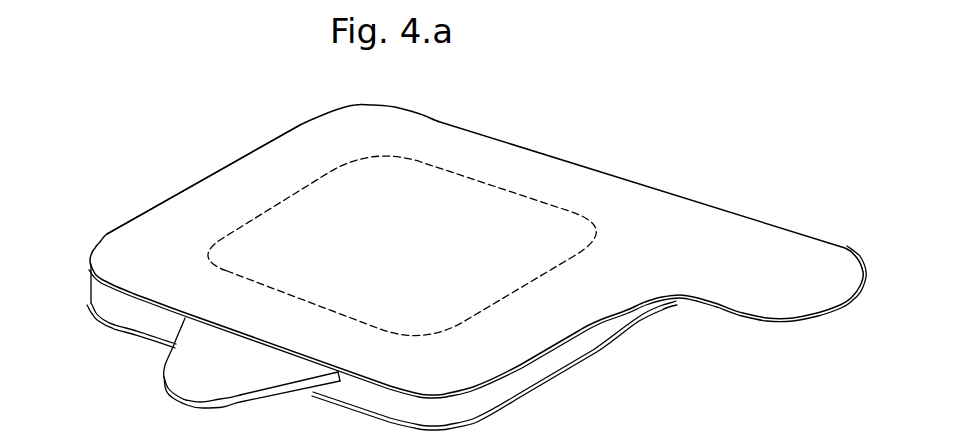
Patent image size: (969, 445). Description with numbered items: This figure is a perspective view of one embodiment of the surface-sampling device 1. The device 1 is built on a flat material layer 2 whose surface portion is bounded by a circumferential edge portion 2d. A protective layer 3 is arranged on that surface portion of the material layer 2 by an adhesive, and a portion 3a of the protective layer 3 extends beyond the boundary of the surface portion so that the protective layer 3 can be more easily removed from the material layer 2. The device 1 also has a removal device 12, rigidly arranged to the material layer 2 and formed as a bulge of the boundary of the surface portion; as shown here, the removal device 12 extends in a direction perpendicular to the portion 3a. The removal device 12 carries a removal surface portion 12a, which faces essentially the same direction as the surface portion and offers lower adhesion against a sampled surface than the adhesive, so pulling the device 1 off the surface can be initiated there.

The device 1 is at (160, 155).
The material layer 2 is at (112, 300).
The circumferential edge portion 2d is at (257, 152).
The protective layer 3 is at (673, 218).
The portion of the protective layer 3a is at (830, 267).
The removal device 12 is at (247, 398).
The removal surface portion 12a is at (197, 380).